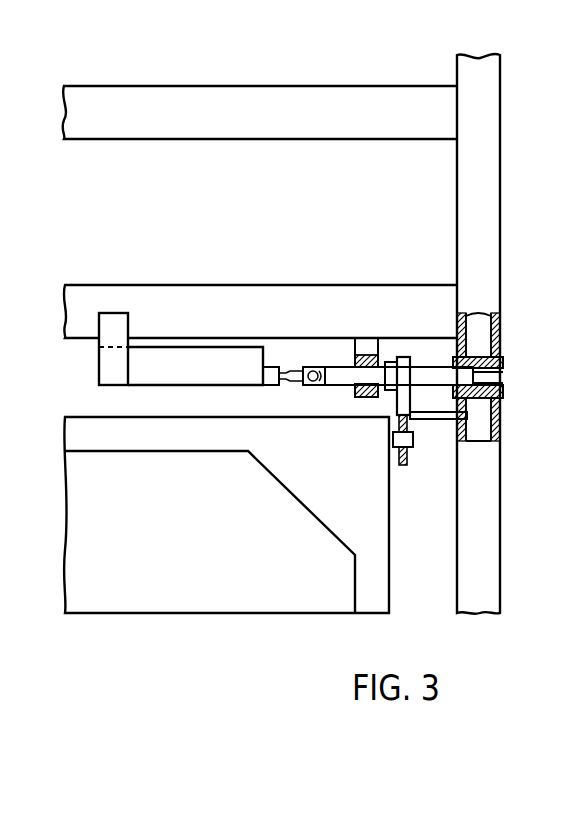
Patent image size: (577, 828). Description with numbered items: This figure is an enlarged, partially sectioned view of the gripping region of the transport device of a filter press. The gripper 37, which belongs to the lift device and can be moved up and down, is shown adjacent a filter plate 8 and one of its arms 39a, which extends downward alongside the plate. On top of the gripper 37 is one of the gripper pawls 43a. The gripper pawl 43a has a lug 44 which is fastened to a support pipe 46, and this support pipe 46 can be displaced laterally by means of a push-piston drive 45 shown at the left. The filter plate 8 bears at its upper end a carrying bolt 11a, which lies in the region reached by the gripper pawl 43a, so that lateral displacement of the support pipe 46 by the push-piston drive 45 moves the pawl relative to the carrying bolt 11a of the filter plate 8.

The gripper 37 is at (311, 141).
The arm 39a is at (488, 560).
The gripper pawl 43a is at (422, 352).
The lug 44 is at (413, 462).
The push-piston drive 45 is at (138, 360).
The support pipe 46 is at (465, 376).
The carrying bolt 11a is at (413, 440).
The filter plate 8 is at (148, 607).